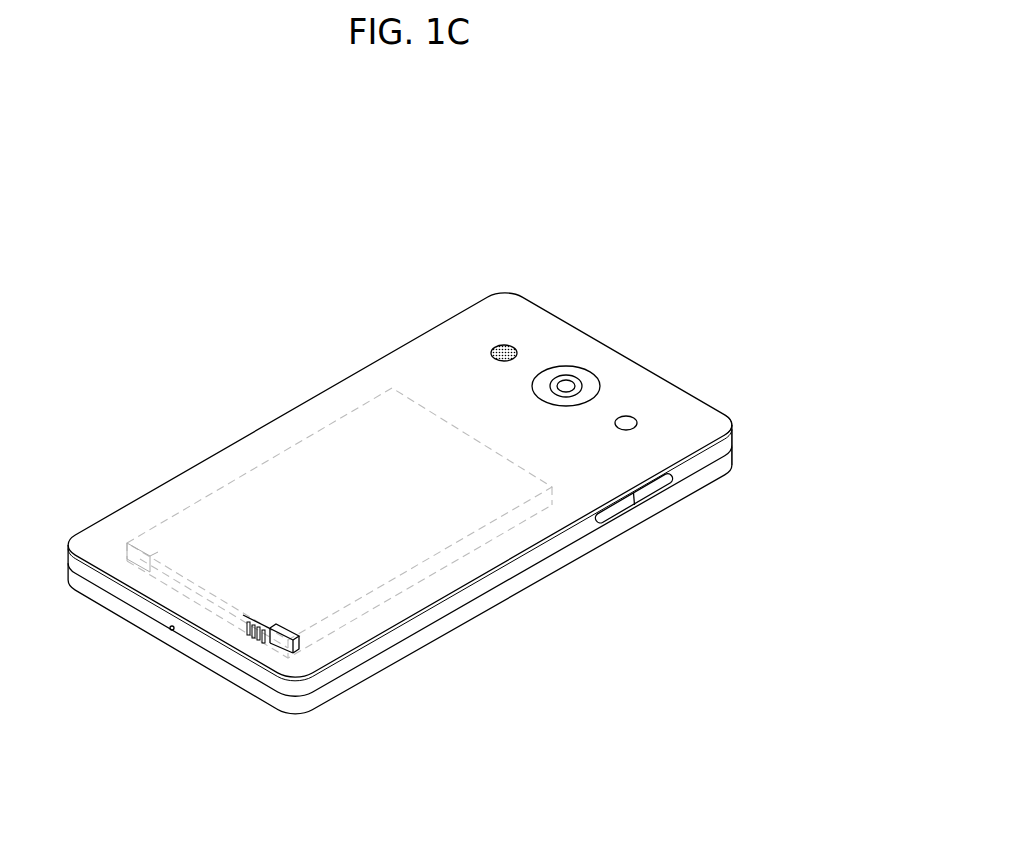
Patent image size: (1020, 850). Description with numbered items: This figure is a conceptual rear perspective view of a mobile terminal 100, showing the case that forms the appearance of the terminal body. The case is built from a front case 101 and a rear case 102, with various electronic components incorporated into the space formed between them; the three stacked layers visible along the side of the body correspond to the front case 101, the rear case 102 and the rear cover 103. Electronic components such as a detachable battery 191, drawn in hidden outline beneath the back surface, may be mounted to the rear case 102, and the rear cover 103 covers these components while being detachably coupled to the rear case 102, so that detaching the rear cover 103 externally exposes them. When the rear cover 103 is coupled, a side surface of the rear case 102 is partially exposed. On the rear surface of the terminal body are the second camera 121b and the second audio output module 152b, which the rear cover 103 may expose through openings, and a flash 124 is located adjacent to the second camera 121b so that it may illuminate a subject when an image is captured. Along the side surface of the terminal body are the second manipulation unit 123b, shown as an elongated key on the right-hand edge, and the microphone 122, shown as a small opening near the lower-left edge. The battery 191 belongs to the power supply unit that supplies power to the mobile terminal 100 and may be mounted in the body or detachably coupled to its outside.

The mobile terminal 100 is at (268, 358).
The front case 101 is at (729, 463).
The rear case 102 is at (728, 442).
The rear cover 103 is at (730, 418).
The second camera 121b is at (567, 383).
The microphone 122 is at (170, 630).
The second manipulation unit 123b is at (620, 513).
The flash 124 is at (628, 420).
The second audio output module 152b is at (510, 350).
The battery 191 is at (423, 575).